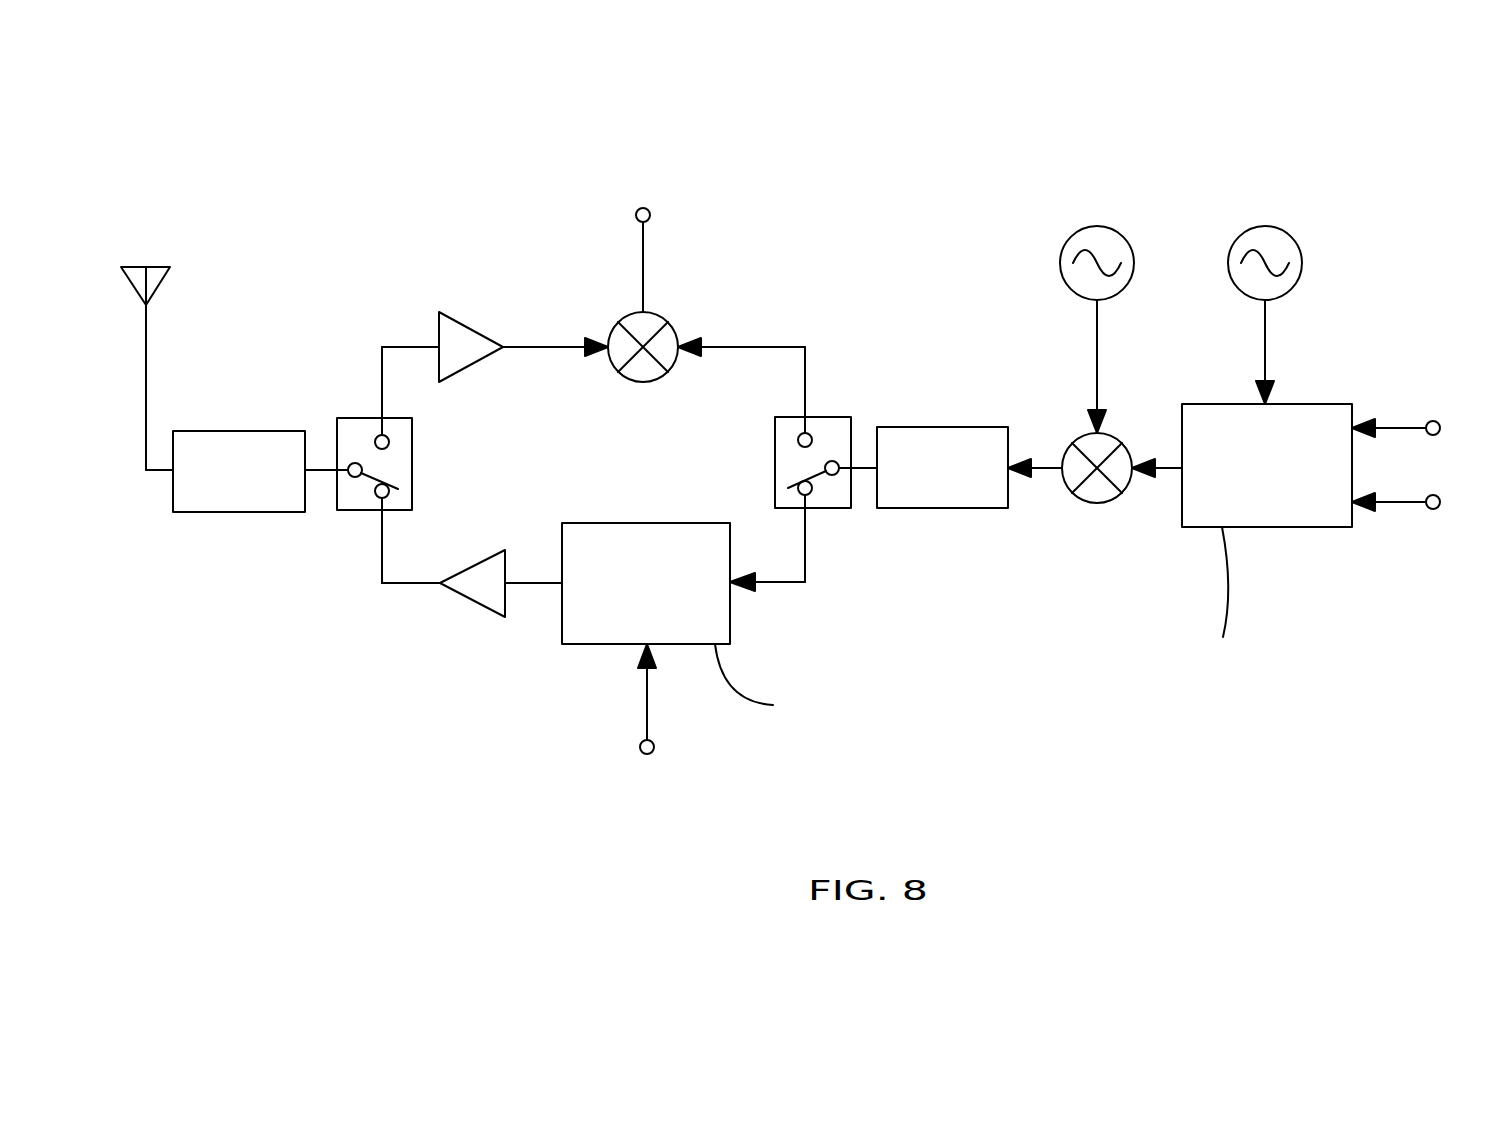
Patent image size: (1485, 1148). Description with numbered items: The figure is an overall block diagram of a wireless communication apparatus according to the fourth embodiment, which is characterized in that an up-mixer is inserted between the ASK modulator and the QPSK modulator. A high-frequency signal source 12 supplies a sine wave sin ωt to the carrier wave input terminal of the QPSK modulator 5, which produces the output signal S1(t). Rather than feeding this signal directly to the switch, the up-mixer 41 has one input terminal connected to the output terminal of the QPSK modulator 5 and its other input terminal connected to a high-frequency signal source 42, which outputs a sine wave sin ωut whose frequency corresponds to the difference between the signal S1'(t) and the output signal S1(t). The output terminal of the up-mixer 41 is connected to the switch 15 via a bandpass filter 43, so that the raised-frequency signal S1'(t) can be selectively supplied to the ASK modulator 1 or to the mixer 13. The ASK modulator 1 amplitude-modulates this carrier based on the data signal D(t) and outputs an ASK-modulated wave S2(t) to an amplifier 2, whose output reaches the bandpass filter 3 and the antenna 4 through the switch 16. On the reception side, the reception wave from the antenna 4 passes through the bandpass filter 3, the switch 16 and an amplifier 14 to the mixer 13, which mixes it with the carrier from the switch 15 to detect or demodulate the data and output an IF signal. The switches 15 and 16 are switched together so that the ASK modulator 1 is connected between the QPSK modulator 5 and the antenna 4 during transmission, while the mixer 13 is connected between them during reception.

The ASK modulator 1 is at (578, 644).
The amplifier 2 is at (472, 605).
The bandpass filter 3 is at (238, 512).
The antenna 4 is at (146, 337).
The QPSK modulator 5 is at (1272, 527).
The high-frequency signal source 12 is at (1302, 262).
The mixer 13 is at (655, 315).
The amplifier 14 is at (470, 327).
The switch 15 is at (830, 508).
The switch 16 is at (345, 418).
The up-mixer 41 is at (1103, 503).
The high-frequency signal source 42 is at (1060, 263).
The bandpass filter 43 is at (942, 427).